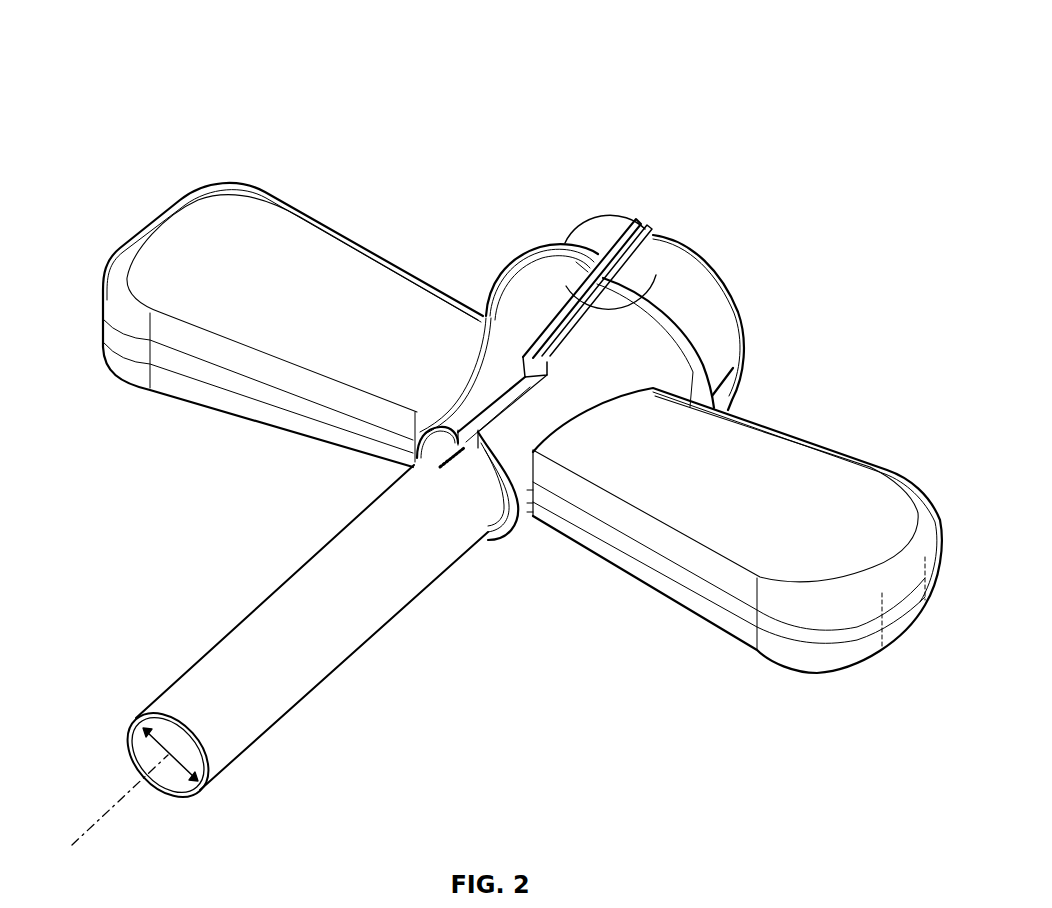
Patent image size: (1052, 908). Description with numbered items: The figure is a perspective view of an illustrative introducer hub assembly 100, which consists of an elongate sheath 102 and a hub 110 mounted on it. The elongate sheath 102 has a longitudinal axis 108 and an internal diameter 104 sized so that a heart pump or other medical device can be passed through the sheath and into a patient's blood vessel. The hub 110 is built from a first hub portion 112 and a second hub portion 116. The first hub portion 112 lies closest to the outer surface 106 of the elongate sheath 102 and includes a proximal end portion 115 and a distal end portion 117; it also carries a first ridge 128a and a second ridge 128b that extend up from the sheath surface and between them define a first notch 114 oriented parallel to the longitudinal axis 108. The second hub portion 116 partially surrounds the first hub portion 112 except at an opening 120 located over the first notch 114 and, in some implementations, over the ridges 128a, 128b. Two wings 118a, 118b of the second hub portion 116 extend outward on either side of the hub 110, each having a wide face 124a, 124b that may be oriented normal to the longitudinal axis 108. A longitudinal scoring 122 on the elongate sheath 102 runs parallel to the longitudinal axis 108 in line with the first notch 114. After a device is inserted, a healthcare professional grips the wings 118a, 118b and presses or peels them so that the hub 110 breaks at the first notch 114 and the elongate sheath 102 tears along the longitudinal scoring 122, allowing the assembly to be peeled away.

The introducer hub assembly 100 is at (122, 48).
The elongate sheath 102 is at (350, 655).
The internal diameter 104 is at (170, 750).
The outer surface 106 is at (253, 628).
The longitudinal axis 108 is at (108, 812).
The hub 110 is at (545, 527).
The first hub portion 112 is at (597, 255).
The first notch 114 is at (642, 228).
The proximal end portion 115 is at (606, 217).
The second hub portion 116 is at (718, 340).
The distal end portion 117 is at (490, 540).
The wing 118a is at (872, 648).
The wing 118b is at (117, 368).
The opening 120 is at (648, 247).
The longitudinal scoring 122 is at (405, 457).
The wide face 124a is at (855, 486).
The wide face 124b is at (223, 210).
The first ridge 128a is at (617, 307).
The second ridge 128b is at (582, 262).